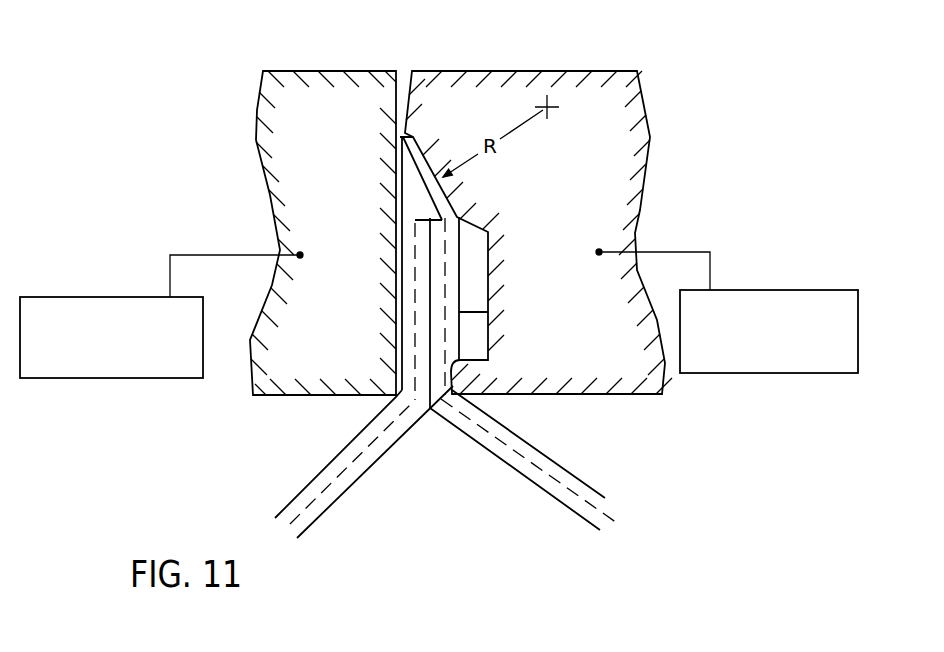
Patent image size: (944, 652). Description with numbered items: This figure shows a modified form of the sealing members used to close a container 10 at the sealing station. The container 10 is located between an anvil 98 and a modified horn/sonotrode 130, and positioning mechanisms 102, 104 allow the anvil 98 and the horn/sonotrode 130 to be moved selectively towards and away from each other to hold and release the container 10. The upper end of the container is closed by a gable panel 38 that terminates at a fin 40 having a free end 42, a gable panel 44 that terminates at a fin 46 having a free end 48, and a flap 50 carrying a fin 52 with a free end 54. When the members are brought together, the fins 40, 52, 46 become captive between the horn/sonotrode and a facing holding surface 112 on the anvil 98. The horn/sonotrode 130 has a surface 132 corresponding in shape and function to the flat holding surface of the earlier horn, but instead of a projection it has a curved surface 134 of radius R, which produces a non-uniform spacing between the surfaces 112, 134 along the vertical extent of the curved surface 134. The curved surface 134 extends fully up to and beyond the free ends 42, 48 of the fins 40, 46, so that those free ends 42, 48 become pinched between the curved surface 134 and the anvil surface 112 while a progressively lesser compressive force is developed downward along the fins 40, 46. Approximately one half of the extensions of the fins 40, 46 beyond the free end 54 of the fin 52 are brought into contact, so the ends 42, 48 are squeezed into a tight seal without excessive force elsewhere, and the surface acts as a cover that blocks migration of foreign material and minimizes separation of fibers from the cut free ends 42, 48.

The container 10 is at (470, 344).
The gable panel 38 is at (332, 462).
The fin 40 is at (402, 260).
The free end 42 is at (400, 138).
The gable panel 44 is at (552, 456).
The fin 46 is at (460, 312).
The free end 48 is at (412, 137).
The flap 50 is at (444, 344).
The fin 52 is at (448, 203).
The free end 54 is at (440, 192).
The anvil 98 is at (290, 194).
The positioning mechanism 102 is at (80, 378).
The positioning mechanism 104 is at (810, 290).
The holding surface 112 is at (394, 358).
The horn/sonotrode 130 is at (603, 360).
The surface 132 is at (430, 407).
The curved surface 134 is at (432, 172).